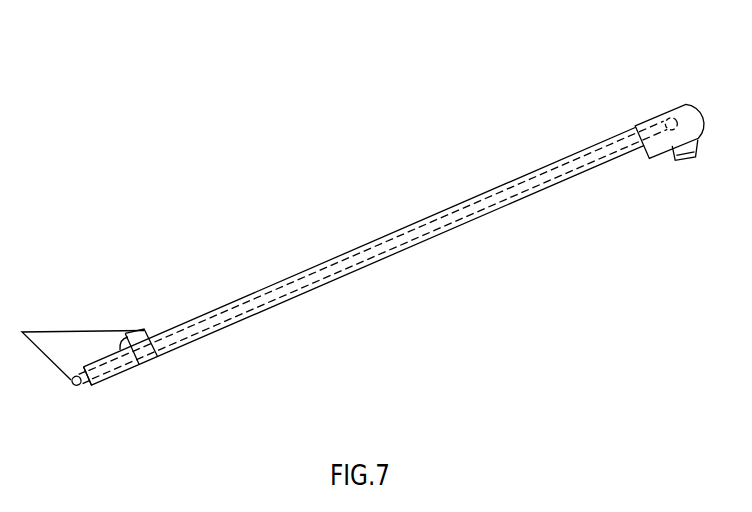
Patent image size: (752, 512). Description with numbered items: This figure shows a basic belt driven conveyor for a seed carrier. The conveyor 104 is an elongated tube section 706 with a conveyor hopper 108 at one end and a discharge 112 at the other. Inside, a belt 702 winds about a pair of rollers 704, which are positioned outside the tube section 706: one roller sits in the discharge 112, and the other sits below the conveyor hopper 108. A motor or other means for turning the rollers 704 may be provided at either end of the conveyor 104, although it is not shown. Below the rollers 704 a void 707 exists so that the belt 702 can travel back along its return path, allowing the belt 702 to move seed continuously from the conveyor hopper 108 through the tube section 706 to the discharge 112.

The conveyor 104 is at (306, 271).
The conveyor hopper 108 is at (74, 337).
The discharge 112 is at (684, 104).
The belt 702 is at (526, 194).
The rollers 704 is at (73, 386).
The tube section 706 is at (449, 200).
The void 707 is at (93, 399).